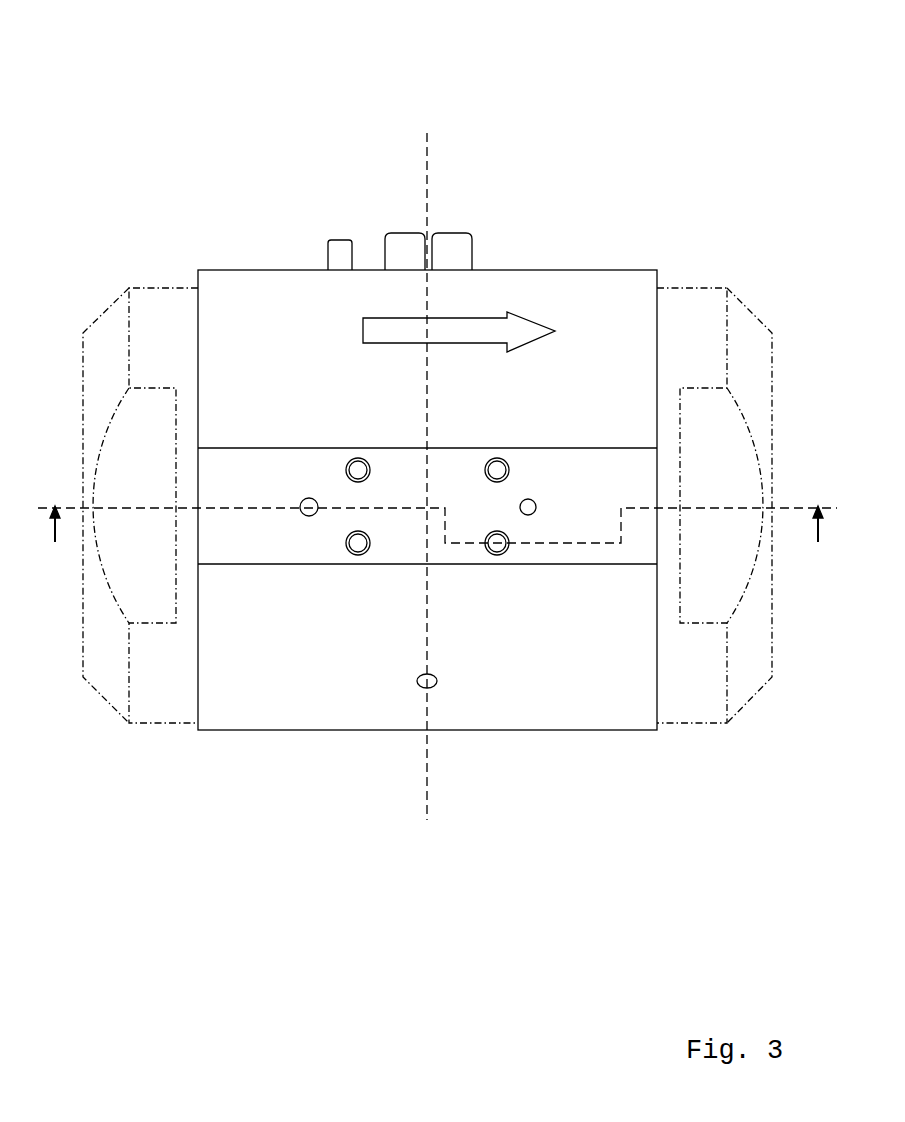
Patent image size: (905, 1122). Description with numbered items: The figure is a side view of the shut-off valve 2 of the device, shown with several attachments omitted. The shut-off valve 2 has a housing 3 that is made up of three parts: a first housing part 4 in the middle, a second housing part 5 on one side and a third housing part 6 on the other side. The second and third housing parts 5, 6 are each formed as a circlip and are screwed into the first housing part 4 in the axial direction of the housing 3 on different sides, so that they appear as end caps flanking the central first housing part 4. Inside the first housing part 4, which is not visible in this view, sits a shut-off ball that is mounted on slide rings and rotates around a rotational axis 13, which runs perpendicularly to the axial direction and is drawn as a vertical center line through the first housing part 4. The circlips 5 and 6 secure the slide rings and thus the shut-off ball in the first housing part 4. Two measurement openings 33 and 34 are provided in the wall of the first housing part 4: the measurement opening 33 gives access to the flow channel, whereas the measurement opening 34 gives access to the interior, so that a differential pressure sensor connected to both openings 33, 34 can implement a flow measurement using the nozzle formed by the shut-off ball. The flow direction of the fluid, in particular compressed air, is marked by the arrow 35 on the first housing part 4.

The shut-off valve 2 is at (160, 67).
The housing 3 is at (603, 271).
The first housing part 4 is at (271, 278).
The second housing part 5 is at (145, 287).
The third housing part 6 is at (697, 297).
The rotational axis 13 is at (427, 170).
The measurement opening 33 is at (531, 500).
The measurement opening 34 is at (304, 517).
The arrow 35 is at (459, 340).